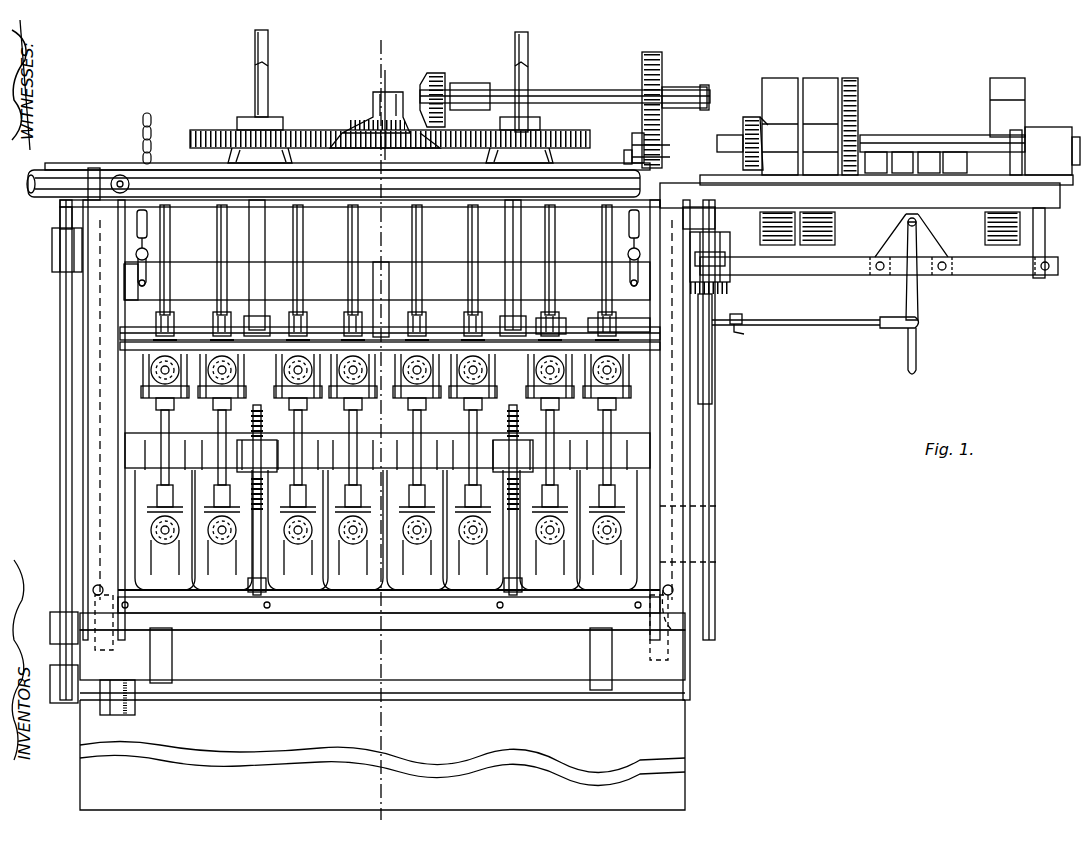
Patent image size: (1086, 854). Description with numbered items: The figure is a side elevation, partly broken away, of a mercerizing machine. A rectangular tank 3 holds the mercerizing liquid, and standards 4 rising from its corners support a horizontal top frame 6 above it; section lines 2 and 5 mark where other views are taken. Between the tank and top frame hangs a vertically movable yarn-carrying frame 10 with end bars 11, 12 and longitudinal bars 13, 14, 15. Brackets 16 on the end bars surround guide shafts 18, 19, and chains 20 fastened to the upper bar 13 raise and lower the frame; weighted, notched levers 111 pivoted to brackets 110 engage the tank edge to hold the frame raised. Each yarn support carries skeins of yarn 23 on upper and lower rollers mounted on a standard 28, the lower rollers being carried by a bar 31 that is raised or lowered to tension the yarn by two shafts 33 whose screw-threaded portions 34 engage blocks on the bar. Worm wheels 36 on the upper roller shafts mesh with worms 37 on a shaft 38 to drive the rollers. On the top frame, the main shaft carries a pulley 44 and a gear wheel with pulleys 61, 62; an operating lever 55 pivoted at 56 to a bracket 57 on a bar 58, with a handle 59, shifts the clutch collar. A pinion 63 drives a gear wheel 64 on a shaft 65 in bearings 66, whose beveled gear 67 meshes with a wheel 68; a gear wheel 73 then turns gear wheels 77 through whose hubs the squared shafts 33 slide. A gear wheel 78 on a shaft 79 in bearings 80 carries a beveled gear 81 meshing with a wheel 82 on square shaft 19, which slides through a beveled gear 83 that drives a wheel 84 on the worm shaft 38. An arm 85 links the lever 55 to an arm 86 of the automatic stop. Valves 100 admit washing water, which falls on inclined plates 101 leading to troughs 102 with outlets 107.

The section line 2 is at (383, 445).
The tank 3 is at (670, 740).
The standards 4 is at (95, 381).
The section line 5 is at (60, 218).
The top frame 6 is at (190, 172).
The yarn-carrying frame 10 is at (528, 36).
The end bar 11 is at (125, 323).
The end bar 12 is at (720, 507).
The upper longitudinal bar 13 is at (330, 272).
The longitudinal bar 14 is at (332, 335).
The longitudinal bar 15 is at (430, 600).
The bracket 16 is at (52, 260).
The shaft 18 is at (60, 466).
The shaft 19 is at (716, 464).
The chains 20 is at (150, 238).
The skeins of yarn 23 is at (150, 412).
The standard 28 is at (626, 566).
The bar 31 is at (387, 450).
The shafts 33 is at (255, 56).
The screw-threaded portions 34 is at (262, 500).
The worm wheel 36 is at (612, 334).
The worm 37 is at (560, 324).
The shaft 38 is at (506, 340).
The pulley 44 is at (1025, 86).
The operating lever 55 is at (918, 298).
The pivot 56 is at (918, 222).
The bracket 57 is at (892, 238).
The bar 58 is at (1006, 275).
The handle 59 is at (918, 368).
The pulley 61 is at (820, 78).
The pulley 62 is at (778, 78).
The pinion 63 is at (632, 147).
The gear wheel 64 is at (664, 70).
The shaft 65 is at (575, 86).
The bearings 66 is at (473, 83).
The beveled gear wheel 67 is at (437, 73).
The beveled gear wheel 68 is at (360, 112).
The gear wheel 73 is at (345, 128).
The gear wheels 77 is at (218, 130).
The gear wheel 78 is at (858, 97).
The shaft 79 is at (937, 142).
The bearings 80 is at (1045, 128).
The beveled gear wheel 81 is at (762, 117).
The beveled gear wheel 82 is at (727, 140).
The beveled gear wheel 83 is at (730, 290).
The beveled gear wheel 84 is at (712, 335).
The arm 85 is at (850, 328).
The arm 86 is at (728, 322).
The valves 100 is at (124, 176).
The inclined plates 101 is at (382, 621).
The troughs 102 is at (382, 664).
The outlets 107 is at (100, 705).
The bracket 110 is at (720, 562).
The lever 111 is at (700, 610).